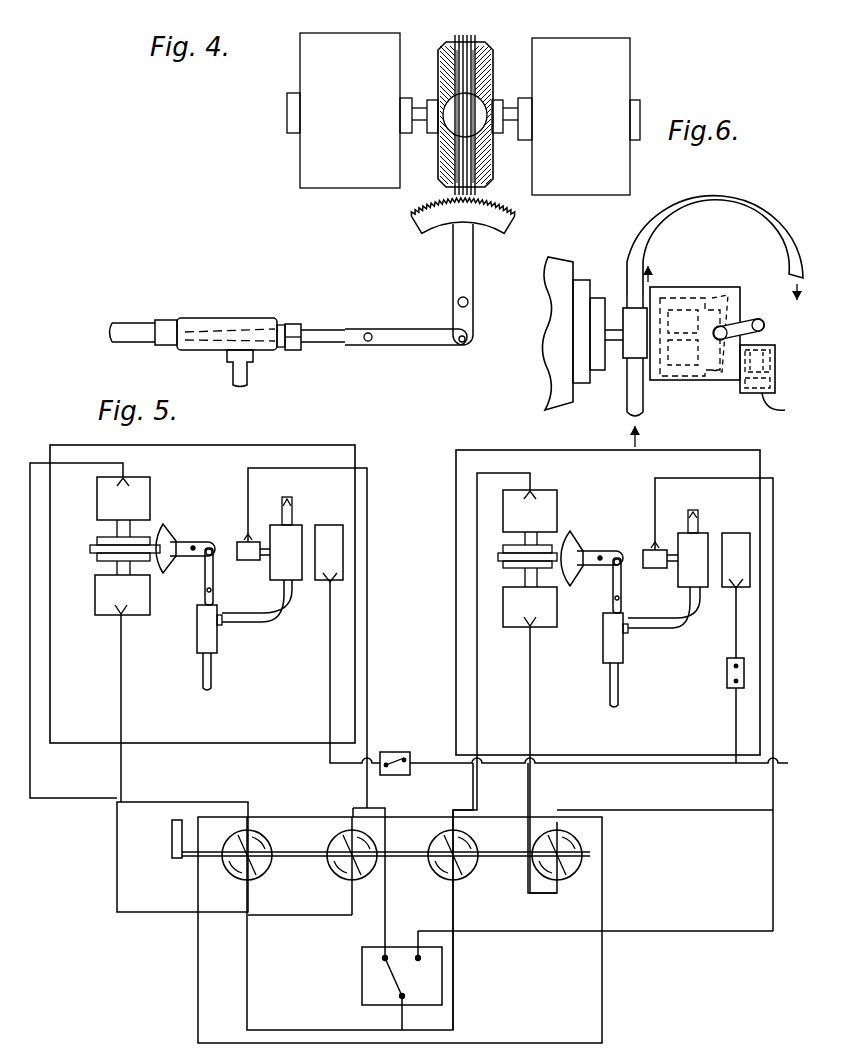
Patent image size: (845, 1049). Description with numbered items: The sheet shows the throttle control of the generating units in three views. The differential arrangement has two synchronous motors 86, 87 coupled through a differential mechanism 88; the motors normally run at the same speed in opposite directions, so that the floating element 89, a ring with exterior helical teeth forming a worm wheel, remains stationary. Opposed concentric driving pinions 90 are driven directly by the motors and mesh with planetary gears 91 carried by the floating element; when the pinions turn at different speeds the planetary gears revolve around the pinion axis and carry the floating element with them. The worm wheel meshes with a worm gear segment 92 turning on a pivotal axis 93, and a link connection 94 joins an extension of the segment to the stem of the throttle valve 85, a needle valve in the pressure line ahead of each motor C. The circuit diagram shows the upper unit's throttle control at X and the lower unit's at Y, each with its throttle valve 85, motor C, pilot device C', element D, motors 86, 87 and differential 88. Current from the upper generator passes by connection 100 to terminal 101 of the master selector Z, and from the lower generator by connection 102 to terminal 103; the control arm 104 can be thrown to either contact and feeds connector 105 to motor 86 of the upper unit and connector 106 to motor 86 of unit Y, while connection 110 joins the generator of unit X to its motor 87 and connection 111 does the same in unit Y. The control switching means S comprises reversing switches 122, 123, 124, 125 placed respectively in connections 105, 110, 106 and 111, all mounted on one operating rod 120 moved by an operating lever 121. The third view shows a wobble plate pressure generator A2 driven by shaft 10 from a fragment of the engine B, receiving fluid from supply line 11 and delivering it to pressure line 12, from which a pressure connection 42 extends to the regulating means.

In FIG. 4, the throttle valve 85 is at (232, 320).
In FIG. 5, the throttle valve 85 is at (218, 648).
In FIG. 4, the synchronous motor 86 is at (349, 110).
In FIG. 5, the synchronous motor 86 is at (327, 504).
In FIG. 4, the synchronous motor 87 is at (579, 116).
In FIG. 5, the synchronous motor 87 is at (326, 601).
In FIG. 4, the differential mechanism 88 is at (493, 43).
In FIG. 5, the differential mechanism 88 is at (95, 546).
In FIG. 4, the floating element 89 is at (466, 60).
In FIG. 4, the driving pinion 90 is at (487, 156).
In FIG. 4, the planetary gear 91 is at (480, 100).
In FIG. 4, the worm gear segment 92 is at (477, 262).
In FIG. 5, the worm gear segment 92 is at (188, 543).
In FIG. 4, the pivotal axis 93 is at (470, 302).
In FIG. 4, the link connection 94 is at (424, 348).
In FIG. 5, the link connection 94 is at (204, 570).
In FIG. 6, the shaft 10 is at (617, 362).
In FIG. 6, the supply line 11 is at (645, 396).
In FIG. 6, the pressure line 12 is at (770, 214).
In FIG. 6, the pressure connection 42 is at (762, 412).
In FIG. 6, the wobble plate pressure generator A2 is at (718, 290).
In FIG. 6, the engine B is at (560, 403).
In FIG. 5, the upper unit throttle control X is at (291, 447).
In FIG. 6, the lower unit throttle control Y is at (548, 445).
In FIG. 5, the lower unit throttle control Y is at (548, 448).
In FIG. 5, the motor C is at (489, 542).
In FIG. 5, the valve D is at (532, 556).
In FIG. 5, the pilot valve C' is at (456, 566).
In FIG. 5, the control switching means S is at (210, 958).
In FIG. 5, the master selector Z is at (372, 989).
In FIG. 5, the connection 100 is at (355, 667).
In FIG. 5, the terminal 101 is at (368, 959).
In FIG. 5, the connection 102 is at (477, 677).
In FIG. 5, the terminal 103 is at (440, 962).
In FIG. 5, the control arm 104 is at (401, 979).
In FIG. 5, the connector 105 is at (250, 960).
In FIG. 5, the connector 106 is at (452, 1005).
In FIG. 5, the connection 110 is at (117, 860).
In FIG. 5, the connection 111 is at (533, 714).
In FIG. 5, the operating rod 120 is at (300, 862).
In FIG. 5, the operating lever 121 is at (172, 842).
In FIG. 5, the reversing switch 122 is at (262, 838).
In FIG. 5, the reversing switch 123 is at (358, 879).
In FIG. 5, the reversing switch 124 is at (473, 878).
In FIG. 5, the reversing switch 125 is at (570, 879).